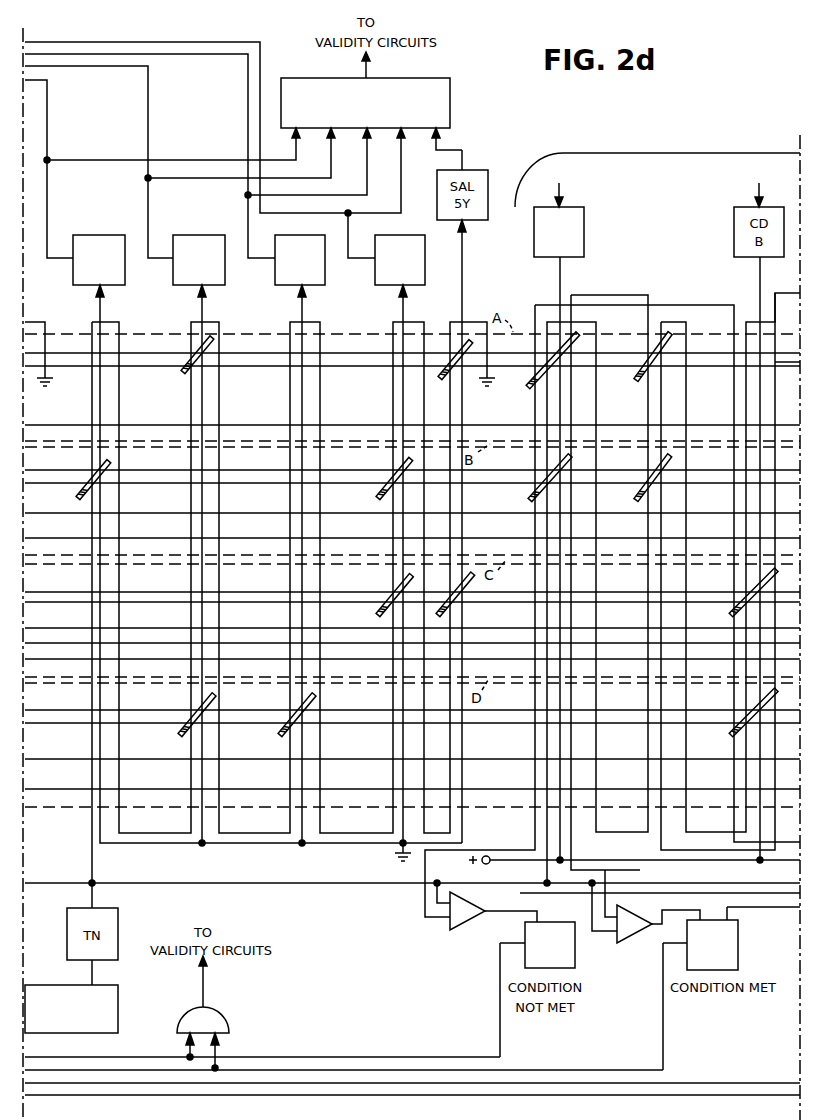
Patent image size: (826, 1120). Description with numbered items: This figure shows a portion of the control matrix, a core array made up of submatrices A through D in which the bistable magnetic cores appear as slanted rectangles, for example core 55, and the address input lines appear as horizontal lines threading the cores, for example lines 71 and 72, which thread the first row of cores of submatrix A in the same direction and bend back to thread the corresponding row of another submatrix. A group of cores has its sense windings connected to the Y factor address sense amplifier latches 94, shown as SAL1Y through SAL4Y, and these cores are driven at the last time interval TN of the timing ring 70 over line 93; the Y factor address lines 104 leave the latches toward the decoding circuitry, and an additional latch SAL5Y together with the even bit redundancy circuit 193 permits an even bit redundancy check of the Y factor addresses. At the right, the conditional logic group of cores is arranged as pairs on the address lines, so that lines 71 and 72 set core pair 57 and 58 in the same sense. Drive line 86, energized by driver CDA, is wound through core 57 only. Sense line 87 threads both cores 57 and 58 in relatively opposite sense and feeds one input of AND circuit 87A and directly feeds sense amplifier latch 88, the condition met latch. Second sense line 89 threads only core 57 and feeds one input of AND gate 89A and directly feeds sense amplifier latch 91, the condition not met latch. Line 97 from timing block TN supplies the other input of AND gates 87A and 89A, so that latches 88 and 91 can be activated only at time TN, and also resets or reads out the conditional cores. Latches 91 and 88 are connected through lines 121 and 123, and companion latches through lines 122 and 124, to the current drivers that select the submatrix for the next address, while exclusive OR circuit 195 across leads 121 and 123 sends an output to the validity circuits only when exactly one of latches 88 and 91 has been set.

The Y factor address lines 104 is at (50, 82).
The even bit redundancy circuit 193 is at (452, 92).
The Y factor address sense amplifier latches 94 is at (126, 284).
The drive line 86 is at (559, 268).
The sense line 87 is at (593, 296).
The second sense line 89 is at (658, 307).
The address input line 71 is at (64, 356).
The address input line 72 is at (67, 426).
The core 55 is at (183, 372).
The core 57 is at (529, 387).
The core 58 is at (634, 382).
The line 93 is at (92, 850).
The line 97 is at (245, 883).
The timing ring 70 is at (118, 1008).
The exclusive OR circuit 195 is at (222, 1016).
The AND gate 89A is at (468, 925).
The sense amplifier latch 91 is at (577, 966).
The AND circuit 87A is at (634, 937).
The sense amplifier latch 88 is at (737, 948).
The line 121 is at (300, 1057).
The line 122 is at (669, 1083).
The line 123 is at (400, 1069).
The line 124 is at (733, 1095).